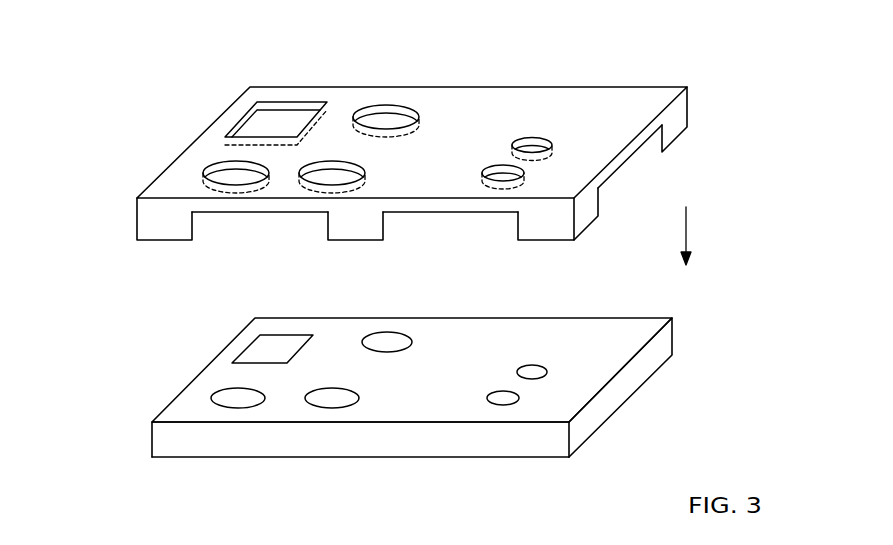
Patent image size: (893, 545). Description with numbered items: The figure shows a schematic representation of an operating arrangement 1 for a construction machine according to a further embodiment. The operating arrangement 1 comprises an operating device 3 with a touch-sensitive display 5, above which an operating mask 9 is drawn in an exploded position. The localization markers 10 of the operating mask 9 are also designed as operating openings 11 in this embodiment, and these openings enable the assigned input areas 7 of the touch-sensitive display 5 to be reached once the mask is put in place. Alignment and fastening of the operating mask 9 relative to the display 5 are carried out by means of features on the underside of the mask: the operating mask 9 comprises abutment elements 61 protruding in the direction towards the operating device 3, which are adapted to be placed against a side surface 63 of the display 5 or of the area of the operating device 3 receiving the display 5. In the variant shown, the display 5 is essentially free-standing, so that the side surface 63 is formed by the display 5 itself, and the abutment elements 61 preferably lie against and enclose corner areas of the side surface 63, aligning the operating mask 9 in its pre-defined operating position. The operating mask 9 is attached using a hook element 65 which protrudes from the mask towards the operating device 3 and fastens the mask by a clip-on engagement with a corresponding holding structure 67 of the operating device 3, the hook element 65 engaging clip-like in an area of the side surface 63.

The operating arrangement 1 is at (93, 166).
The operating device 3 is at (190, 470).
The touch-sensitive display 5 is at (551, 410).
The input areas 7 is at (281, 340).
The operating mask 9 is at (615, 72).
The localization markers 10 is at (337, 108).
The operating openings 11 is at (283, 104).
The abutment elements 61 is at (158, 240).
The side surface 63 is at (632, 387).
The hook element 65 is at (358, 240).
The holding structure 67 is at (339, 470).